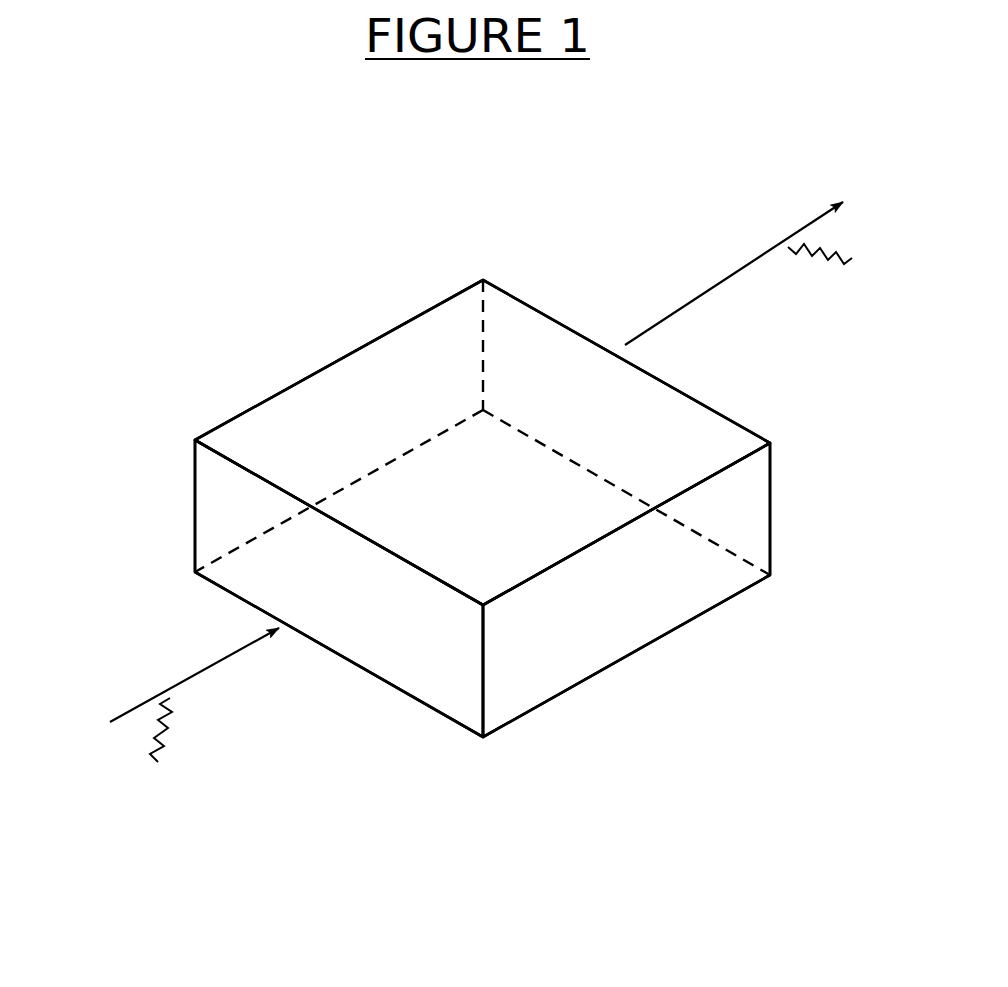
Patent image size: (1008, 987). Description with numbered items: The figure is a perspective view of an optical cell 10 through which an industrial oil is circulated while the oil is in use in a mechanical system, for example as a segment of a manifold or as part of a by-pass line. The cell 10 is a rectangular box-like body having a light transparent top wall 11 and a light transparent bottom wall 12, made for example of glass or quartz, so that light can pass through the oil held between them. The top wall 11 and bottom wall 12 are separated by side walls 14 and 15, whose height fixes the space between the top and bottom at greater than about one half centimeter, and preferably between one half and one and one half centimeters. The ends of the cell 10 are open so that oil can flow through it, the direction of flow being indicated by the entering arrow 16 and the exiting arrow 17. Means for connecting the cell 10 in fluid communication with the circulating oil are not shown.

The optical cell 10 is at (291, 374).
The top wall 11 is at (648, 423).
The bottom wall 12 is at (452, 497).
The side wall 14 is at (625, 603).
The side wall 15 is at (208, 517).
The arrow 16 is at (194, 725).
The arrow 17 is at (767, 273).